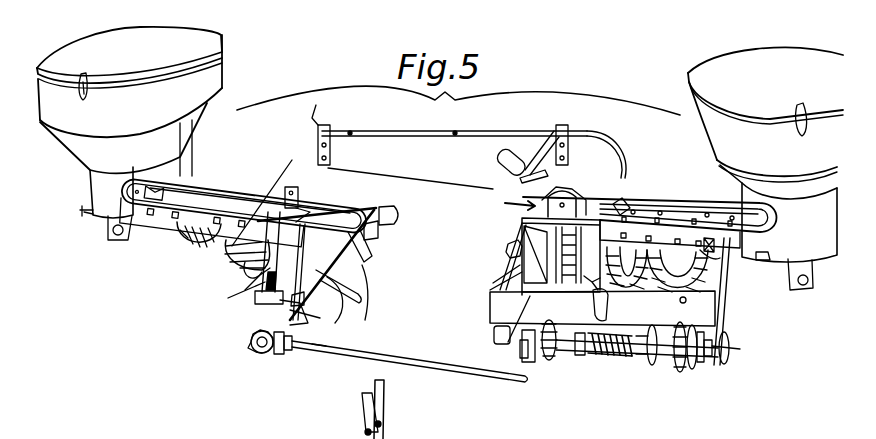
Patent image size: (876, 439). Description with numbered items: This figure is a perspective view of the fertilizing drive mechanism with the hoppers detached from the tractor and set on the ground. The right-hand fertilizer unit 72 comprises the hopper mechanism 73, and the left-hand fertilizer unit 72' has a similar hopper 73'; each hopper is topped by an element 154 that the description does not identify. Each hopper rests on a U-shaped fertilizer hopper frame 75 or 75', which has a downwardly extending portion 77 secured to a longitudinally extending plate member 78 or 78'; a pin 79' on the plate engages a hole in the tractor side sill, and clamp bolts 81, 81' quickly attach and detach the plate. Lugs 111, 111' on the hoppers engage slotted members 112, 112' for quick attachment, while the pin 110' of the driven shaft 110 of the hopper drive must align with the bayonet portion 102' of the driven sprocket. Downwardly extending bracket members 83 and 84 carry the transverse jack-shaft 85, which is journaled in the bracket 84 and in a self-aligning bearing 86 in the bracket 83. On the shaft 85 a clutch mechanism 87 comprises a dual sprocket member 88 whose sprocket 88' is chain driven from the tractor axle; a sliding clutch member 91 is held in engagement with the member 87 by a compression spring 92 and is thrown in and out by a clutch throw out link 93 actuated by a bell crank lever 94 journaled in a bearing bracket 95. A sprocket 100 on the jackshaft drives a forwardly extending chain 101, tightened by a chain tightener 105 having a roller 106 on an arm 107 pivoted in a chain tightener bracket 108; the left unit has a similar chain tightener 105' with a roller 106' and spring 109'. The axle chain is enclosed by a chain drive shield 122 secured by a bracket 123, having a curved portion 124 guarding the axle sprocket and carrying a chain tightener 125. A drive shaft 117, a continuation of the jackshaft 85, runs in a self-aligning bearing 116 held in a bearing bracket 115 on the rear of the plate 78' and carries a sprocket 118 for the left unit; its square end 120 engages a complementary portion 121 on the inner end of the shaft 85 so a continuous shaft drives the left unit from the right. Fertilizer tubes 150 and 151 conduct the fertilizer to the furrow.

The hopper lid 154 is at (221, 34).
The left hand hopper 73' is at (179, 118).
The fertilizer hopper mechanism 73 is at (747, 156).
The chain drive shield 122 is at (466, 134).
The bracket 123 is at (402, 141).
The chain tightener 125 is at (530, 160).
The curved portion 124 is at (598, 142).
The slotted member 112' is at (276, 193).
The slotted members 112 is at (638, 197).
The left hand fertilizer unit 72' is at (243, 203).
The fertilizer unit 72 is at (650, 216).
The left hand fertilizer hopper frame 75' is at (250, 186).
The fertilizer hopper frame 75 is at (679, 197).
The bayonet portion or clutch element 102' is at (312, 195).
The clamp bolts 81' is at (343, 258).
The clamp bolts 81 is at (506, 241).
The longitudinally extending plate member 78' is at (389, 235).
The longitudinally extending plate member 78 is at (535, 256).
The pin 79' is at (346, 265).
The downwardly extending portion 77 is at (508, 246).
The chain tightener bracket 108 is at (598, 192).
The lugs 111' is at (69, 204).
The lugs or complementary members 111 is at (782, 271).
The pin or clutch element 110' is at (101, 235).
The driven shaft 110 is at (102, 249).
The fertilizer tube 150 is at (193, 233).
The arm 107 is at (232, 248).
The fertilizer tube 151 is at (248, 270).
The spring 109' is at (231, 304).
The roller 106' is at (271, 269).
The roller 106 is at (502, 347).
The bearing bracket 115 is at (292, 326).
The sprocket 118 is at (251, 351).
The self-aligning bearing 116 is at (276, 348).
The drive shaft 117 is at (322, 350).
The chain tightener 105' is at (410, 355).
The chain tightener 105 is at (543, 314).
The square end 120 is at (520, 386).
The complementary portion 121 is at (494, 332).
The bell crank lever 94 is at (588, 278).
The bearing bracket 95 is at (613, 305).
The clutch throw out link 93 is at (670, 330).
The bracket member 83 is at (725, 335).
The chain 101 is at (637, 336).
The bracket member 84 is at (538, 342).
The transverse drive shaft or jack-shaft 85 is at (578, 345).
The sliding clutch member 91 is at (645, 353).
The compression spring 92 is at (595, 360).
The clutch mechanism 87 is at (672, 350).
The dual sprocket member 88 is at (664, 370).
The sprocket 88' is at (714, 370).
The self aligning bearing 86 is at (715, 356).
The sprocket 100 is at (540, 358).